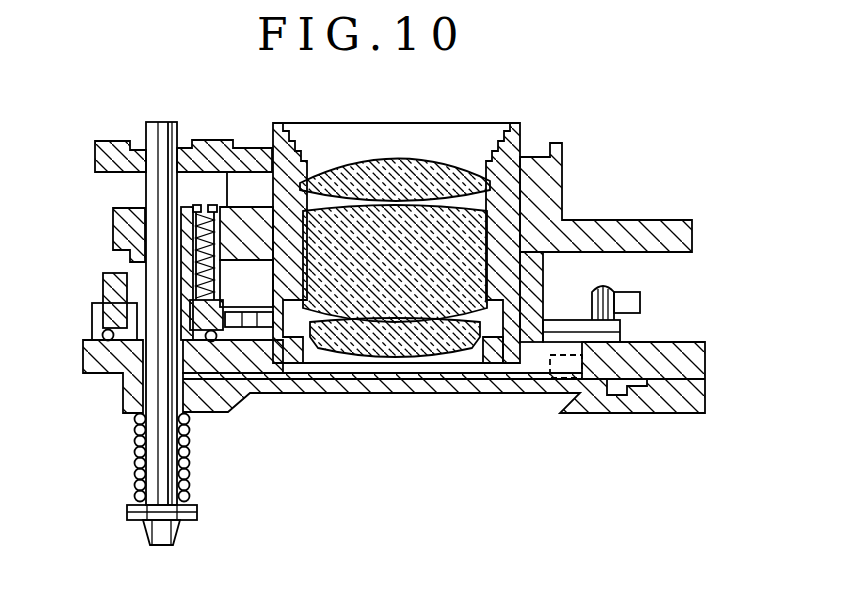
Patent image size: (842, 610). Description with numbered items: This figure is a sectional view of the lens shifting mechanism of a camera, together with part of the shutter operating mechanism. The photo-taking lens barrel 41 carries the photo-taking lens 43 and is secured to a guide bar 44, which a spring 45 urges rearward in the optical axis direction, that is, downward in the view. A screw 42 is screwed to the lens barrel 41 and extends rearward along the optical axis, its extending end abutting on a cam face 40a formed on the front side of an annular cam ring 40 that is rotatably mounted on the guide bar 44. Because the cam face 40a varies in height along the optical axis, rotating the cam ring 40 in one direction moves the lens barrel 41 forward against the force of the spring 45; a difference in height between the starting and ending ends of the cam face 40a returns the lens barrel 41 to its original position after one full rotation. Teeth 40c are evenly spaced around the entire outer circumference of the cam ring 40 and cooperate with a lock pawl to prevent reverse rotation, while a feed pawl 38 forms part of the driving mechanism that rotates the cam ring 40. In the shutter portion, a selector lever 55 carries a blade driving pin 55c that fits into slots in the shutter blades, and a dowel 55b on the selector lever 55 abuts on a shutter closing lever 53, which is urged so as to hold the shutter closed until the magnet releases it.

The feed pawl 38 is at (222, 335).
The cam ring 40 is at (102, 287).
The cam face 40a is at (202, 300).
The teeth 40c is at (92, 317).
The photo-taking lens barrel 41 is at (250, 227).
The screw 42 is at (198, 208).
The photo-taking lens 43 is at (413, 175).
The guide bar 44 is at (157, 192).
The spring 45 is at (135, 470).
The shutter closing lever 53 is at (627, 298).
The selector lever 55 is at (612, 330).
The dowel 55b is at (597, 287).
The blade driving pin 55c is at (549, 366).